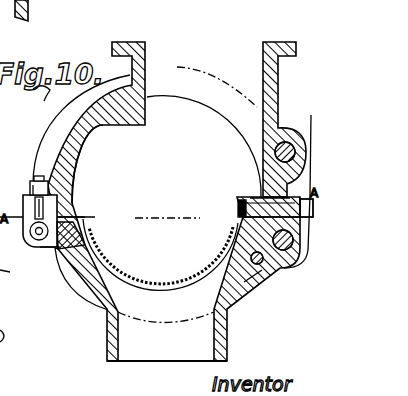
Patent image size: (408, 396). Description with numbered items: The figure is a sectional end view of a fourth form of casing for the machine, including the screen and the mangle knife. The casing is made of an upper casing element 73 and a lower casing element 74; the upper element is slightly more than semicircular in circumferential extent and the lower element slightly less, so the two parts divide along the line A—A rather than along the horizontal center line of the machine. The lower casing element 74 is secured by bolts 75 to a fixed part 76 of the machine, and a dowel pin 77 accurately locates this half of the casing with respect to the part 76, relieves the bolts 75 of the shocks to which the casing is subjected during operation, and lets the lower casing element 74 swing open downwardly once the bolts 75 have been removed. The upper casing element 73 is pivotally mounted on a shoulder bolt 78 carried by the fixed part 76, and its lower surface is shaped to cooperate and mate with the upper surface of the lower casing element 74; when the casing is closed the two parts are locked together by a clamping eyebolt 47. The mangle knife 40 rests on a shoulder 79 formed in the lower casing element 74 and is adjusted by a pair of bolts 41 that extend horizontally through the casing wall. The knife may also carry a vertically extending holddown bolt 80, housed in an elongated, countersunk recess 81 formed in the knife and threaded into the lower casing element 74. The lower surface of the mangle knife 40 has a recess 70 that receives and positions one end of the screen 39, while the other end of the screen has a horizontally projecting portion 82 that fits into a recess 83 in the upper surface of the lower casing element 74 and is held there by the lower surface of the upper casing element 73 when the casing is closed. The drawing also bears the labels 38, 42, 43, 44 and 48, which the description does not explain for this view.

The valve body 38 is at (193, 350).
The screen 39 is at (160, 283).
The mangle knife 40 is at (237, 200).
The bolts 41 is at (273, 273).
The bolt 42 is at (18, 272).
The nut 43 is at (11, 273).
The washer 44 is at (10, 320).
The clamping eyebolt 47 is at (37, 182).
The inlet flange 48 is at (273, 80).
The recess 70 is at (238, 217).
The upper casing element 73 is at (73, 147).
The lower casing element 74 is at (93, 297).
The bolts 75 is at (57, 252).
The fixed part 76 is at (65, 128).
The dowel pin 77 is at (258, 282).
The shoulder bolt 78 is at (283, 141).
The shoulder 79 is at (267, 262).
The holddown bolt 80 is at (262, 197).
The countersunk recess 81 is at (242, 197).
The horizontally projecting portion 82 is at (87, 217).
The recess 83 is at (82, 227).